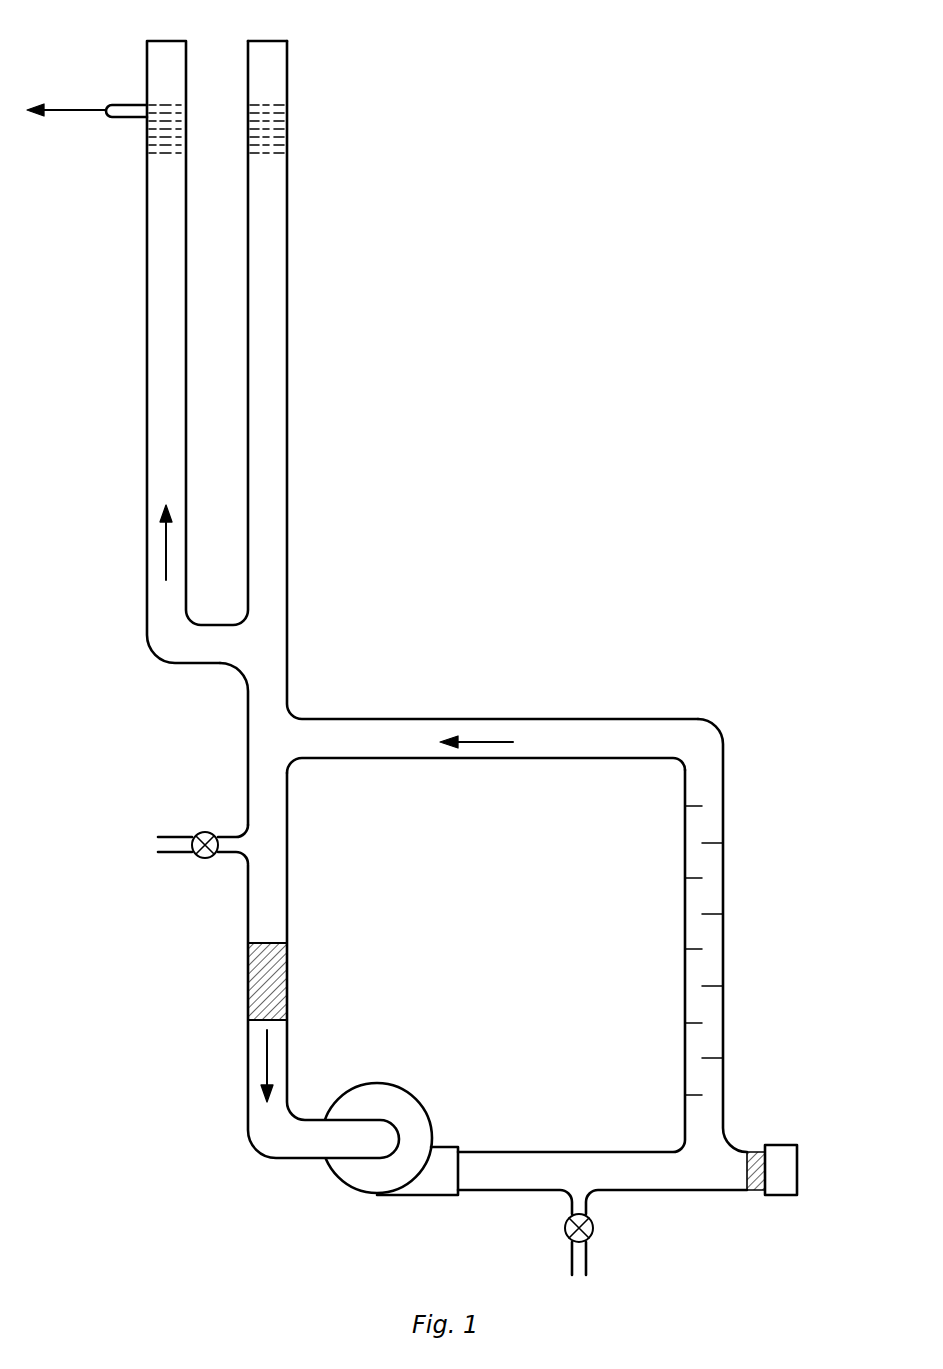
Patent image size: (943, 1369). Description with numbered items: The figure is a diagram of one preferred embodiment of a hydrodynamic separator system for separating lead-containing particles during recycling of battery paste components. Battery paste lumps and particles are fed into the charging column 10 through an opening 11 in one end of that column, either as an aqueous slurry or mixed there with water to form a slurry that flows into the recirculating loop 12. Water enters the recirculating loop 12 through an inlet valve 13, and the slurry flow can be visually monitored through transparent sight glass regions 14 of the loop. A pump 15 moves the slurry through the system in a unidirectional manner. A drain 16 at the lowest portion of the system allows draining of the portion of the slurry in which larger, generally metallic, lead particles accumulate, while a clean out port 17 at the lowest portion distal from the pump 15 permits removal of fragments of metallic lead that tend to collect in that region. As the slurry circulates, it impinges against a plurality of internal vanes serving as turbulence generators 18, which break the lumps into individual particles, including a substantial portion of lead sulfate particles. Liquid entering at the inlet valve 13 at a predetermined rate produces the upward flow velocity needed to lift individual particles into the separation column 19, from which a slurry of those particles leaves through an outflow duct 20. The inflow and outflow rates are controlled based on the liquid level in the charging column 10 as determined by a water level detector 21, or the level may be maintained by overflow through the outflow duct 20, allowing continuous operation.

The charging column 10 is at (287, 270).
The opening 11 is at (265, 40).
The recirculating loop 12 is at (247, 752).
The inlet valve 13 is at (156, 846).
The sight glass regions 14 is at (248, 985).
The pump 15 is at (345, 1172).
The drain 16 is at (590, 1255).
The clean out port 17 is at (800, 1178).
The turbulence generators 18 is at (715, 913).
The separation column 19 is at (147, 270).
The outflow duct 20 is at (130, 104).
The water level detector 21 is at (280, 106).